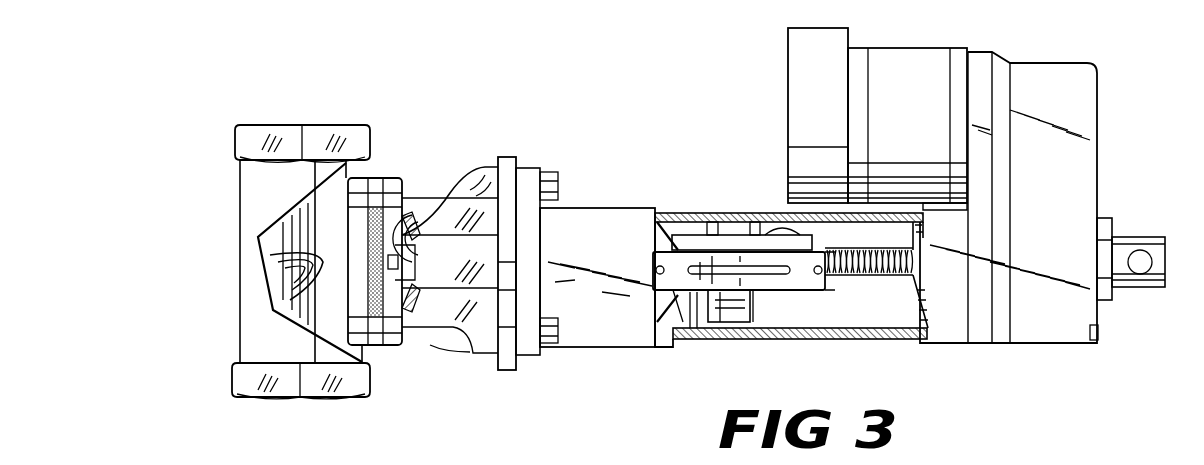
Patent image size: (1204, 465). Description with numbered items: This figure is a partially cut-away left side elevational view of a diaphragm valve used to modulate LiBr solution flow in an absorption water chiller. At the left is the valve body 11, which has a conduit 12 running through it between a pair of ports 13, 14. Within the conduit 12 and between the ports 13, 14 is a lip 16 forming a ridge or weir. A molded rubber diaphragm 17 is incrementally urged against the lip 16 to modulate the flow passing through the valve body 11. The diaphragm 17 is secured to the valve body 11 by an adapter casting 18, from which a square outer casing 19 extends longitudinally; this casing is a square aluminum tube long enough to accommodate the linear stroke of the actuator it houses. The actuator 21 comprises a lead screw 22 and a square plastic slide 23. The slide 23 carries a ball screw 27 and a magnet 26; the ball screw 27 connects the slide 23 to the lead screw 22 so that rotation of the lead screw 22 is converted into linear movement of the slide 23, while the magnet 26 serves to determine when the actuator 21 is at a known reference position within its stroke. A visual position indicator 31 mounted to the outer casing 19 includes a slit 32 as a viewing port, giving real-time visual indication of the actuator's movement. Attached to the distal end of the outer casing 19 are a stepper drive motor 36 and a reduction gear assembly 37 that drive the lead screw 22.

The valve body 11 is at (186, 110).
The conduit 12 is at (317, 290).
The port 13 is at (300, 406).
The port 14 is at (303, 124).
The lip 16 is at (306, 252).
The molded rubber diaphragm 17 is at (373, 178).
The adapter casting 18 is at (468, 170).
The square outer casing 19 is at (840, 340).
The actuator 21 is at (897, 293).
The lead screw 22 is at (867, 272).
The square plastic slide 23 is at (763, 312).
The magnet 26 is at (713, 222).
The ball screw 27 is at (780, 230).
The visual position indicator 31 is at (827, 283).
The slit 32 is at (720, 290).
The stepper drive motor 36 is at (908, 48).
The reduction gear assembly 37 is at (1097, 153).